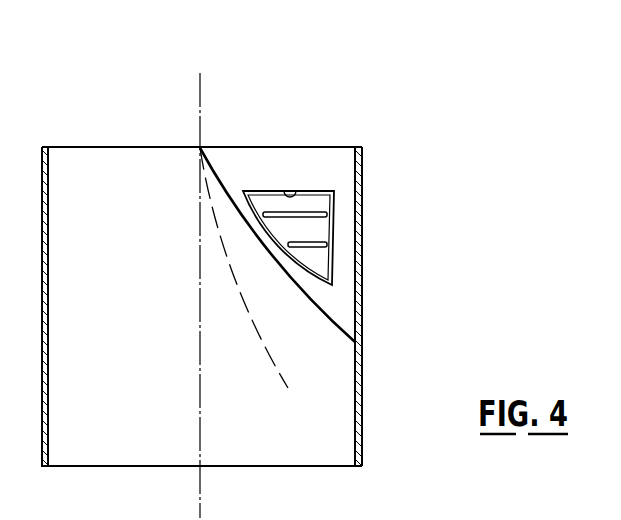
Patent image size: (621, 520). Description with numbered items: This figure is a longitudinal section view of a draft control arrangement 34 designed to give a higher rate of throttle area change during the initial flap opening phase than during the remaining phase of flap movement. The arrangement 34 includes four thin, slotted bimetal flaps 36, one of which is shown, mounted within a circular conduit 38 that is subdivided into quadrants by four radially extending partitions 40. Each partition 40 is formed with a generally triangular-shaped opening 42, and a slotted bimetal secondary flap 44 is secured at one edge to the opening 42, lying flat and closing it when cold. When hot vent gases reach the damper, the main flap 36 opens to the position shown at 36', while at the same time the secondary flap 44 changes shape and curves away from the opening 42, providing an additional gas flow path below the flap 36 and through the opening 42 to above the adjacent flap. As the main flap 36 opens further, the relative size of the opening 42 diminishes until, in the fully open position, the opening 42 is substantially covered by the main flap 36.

The draft control arrangement 34 is at (372, 277).
The slotted bimetal flap 36 is at (277, 262).
The main flap in open position 36' is at (255, 292).
The circular conduit 38 is at (362, 377).
The radially extending partition 40 is at (344, 310).
The triangular-shaped opening 42 is at (290, 193).
The slotted bimetal secondary flap 44 is at (322, 230).